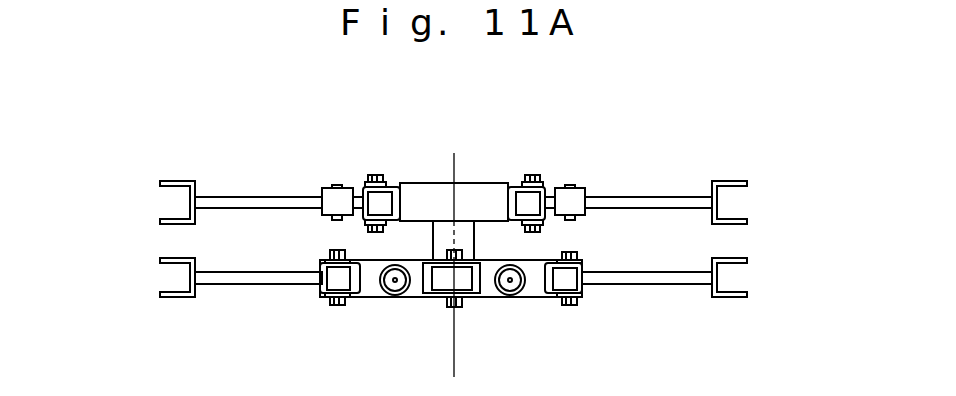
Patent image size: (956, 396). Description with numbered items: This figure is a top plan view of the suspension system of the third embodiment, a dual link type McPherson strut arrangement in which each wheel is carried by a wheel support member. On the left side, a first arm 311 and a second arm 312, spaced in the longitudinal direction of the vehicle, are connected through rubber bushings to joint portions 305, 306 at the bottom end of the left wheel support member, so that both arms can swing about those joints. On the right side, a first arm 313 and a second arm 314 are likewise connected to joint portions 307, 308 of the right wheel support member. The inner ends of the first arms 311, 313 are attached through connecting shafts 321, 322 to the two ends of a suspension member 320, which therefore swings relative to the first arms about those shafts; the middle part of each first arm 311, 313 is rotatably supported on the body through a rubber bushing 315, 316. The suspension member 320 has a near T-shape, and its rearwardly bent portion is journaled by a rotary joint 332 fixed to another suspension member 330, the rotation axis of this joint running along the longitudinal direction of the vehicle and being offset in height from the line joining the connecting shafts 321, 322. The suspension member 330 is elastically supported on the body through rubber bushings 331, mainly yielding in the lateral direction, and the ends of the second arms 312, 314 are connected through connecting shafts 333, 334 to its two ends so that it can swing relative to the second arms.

The joint portion 305 is at (182, 180).
The joint portion 306 is at (177, 297).
The joint portion 307 is at (730, 181).
The joint portion 308 is at (725, 300).
The first arm 311 is at (242, 197).
The second arm 312 is at (241, 284).
The first arm 313 is at (660, 197).
The second arm 314 is at (648, 284).
The rubber bushing 315 is at (337, 185).
The rubber bushing 316 is at (572, 185).
The suspension member 320 is at (468, 192).
The connecting shaft 321 is at (377, 175).
The connecting shaft 322 is at (530, 175).
The suspension member 330 is at (537, 292).
The rubber bushing 331 is at (394, 296).
The rotary joint 332 is at (450, 307).
The connecting shaft 333 is at (337, 305).
The connecting shaft 334 is at (573, 305).